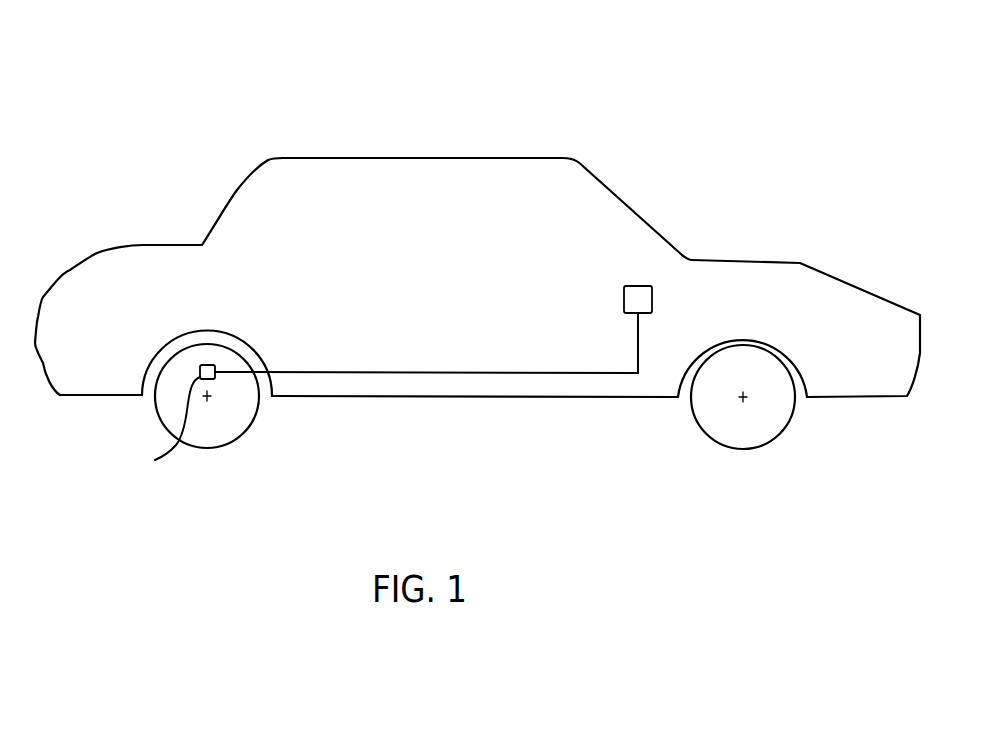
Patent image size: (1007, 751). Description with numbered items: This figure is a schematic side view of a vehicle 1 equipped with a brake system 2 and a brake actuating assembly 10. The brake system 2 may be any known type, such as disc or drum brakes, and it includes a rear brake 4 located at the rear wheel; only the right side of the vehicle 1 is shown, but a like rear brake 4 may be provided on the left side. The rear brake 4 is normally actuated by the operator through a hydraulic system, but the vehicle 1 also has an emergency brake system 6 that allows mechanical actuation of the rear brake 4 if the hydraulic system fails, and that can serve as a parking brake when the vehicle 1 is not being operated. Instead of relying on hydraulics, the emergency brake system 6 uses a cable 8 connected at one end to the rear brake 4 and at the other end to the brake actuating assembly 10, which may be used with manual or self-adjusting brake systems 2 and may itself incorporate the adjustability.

The vehicle 1 is at (223, 110).
The brake system 2 is at (192, 363).
The rear brake 4 is at (162, 435).
The emergency brake system 6 is at (663, 325).
The cable 8 is at (363, 374).
The brake actuating assembly 10 is at (632, 286).